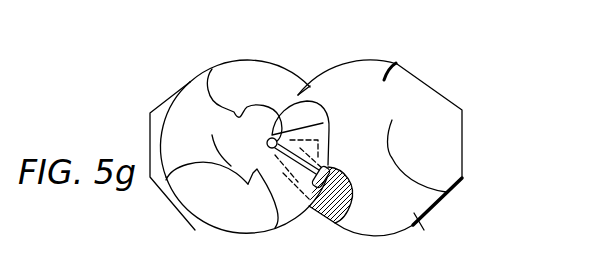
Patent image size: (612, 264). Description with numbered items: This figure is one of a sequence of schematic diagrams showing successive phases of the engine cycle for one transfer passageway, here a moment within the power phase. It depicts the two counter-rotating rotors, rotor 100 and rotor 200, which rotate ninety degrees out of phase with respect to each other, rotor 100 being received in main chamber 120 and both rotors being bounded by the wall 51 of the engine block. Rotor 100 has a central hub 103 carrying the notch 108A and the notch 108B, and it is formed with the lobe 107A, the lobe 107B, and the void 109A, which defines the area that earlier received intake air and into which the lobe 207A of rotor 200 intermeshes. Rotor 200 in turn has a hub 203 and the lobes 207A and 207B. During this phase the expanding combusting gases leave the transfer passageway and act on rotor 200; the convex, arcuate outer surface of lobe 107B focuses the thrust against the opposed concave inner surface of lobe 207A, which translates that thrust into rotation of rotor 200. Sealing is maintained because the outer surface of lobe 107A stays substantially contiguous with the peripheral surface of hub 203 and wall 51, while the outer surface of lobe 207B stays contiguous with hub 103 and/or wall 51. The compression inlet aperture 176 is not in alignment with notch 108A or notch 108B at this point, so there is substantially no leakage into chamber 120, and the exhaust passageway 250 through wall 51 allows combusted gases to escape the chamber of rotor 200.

The main chamber 120 is at (218, 72).
The lobe 107B is at (152, 130).
The notch 108B is at (244, 105).
The hub 103 is at (209, 139).
The rotor 100 is at (263, 155).
The compression inlet aperture 176 is at (301, 99).
The void 109A is at (233, 203).
The notch 108A is at (249, 199).
The lobe 107A is at (276, 229).
The lobe 207B is at (350, 56).
The wall 51 is at (394, 64).
The rotor 200 is at (386, 151).
The hub 203 is at (398, 102).
The exhaust passageway 250 is at (432, 208).
The lobe 207A is at (380, 224).